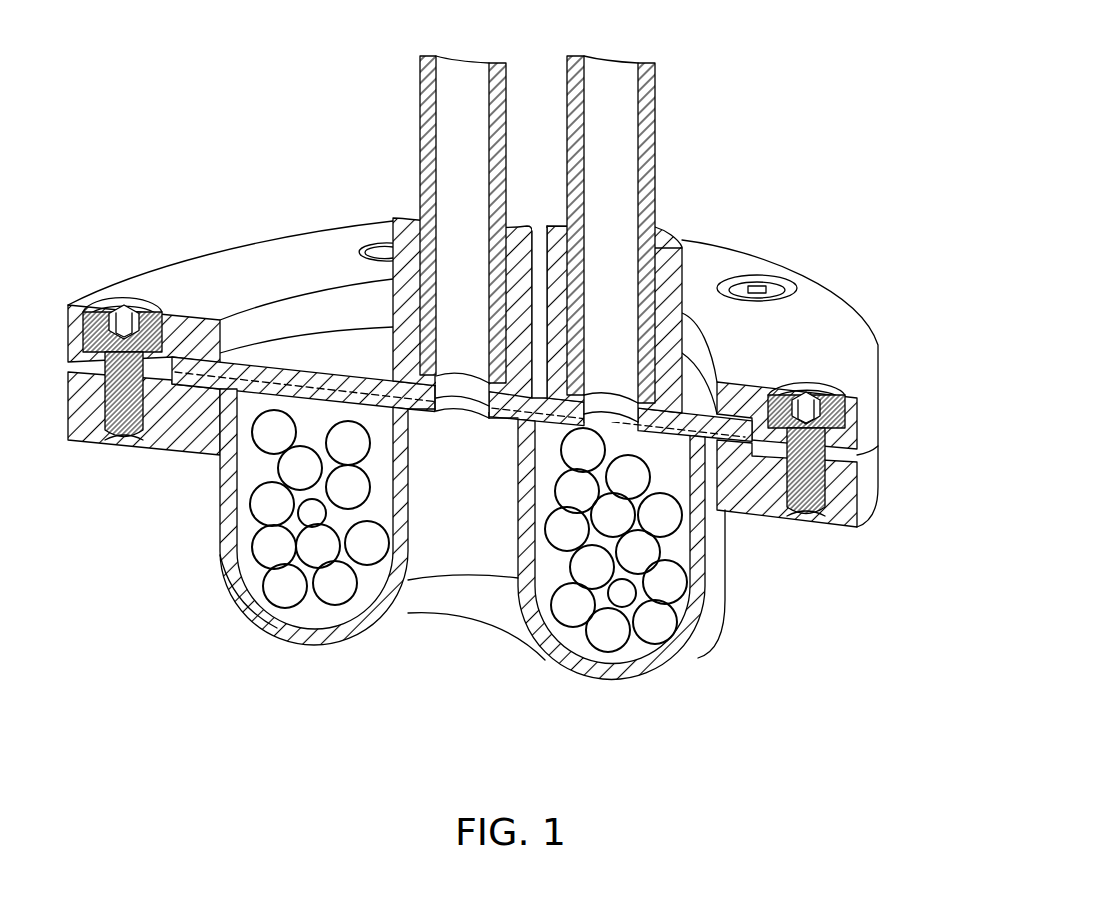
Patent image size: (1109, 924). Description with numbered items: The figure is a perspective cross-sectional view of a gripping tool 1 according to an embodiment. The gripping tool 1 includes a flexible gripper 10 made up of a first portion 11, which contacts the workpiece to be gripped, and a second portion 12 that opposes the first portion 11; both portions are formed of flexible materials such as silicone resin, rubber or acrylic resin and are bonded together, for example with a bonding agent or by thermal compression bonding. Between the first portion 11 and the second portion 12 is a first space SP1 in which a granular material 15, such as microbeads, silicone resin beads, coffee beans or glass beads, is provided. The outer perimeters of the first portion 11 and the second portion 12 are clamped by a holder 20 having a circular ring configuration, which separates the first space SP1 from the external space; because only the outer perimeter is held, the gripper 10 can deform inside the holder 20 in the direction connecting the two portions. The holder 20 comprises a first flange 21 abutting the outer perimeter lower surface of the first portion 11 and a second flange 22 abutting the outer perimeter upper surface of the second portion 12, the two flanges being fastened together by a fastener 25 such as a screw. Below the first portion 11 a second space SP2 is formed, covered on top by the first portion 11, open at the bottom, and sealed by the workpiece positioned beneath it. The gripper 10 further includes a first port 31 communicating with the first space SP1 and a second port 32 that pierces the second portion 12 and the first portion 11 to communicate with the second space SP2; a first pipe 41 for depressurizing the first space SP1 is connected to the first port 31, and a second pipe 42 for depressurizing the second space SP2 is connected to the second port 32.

The gripping tool 1 is at (805, 84).
The gripper 10 is at (462, 580).
The first portion 11 is at (347, 637).
The second portion 12 is at (409, 393).
The granular material 15 is at (263, 503).
The holder 20 is at (531, 374).
The first flange 21 is at (940, 387).
The second flange 22 is at (878, 394).
The fastener 25 is at (807, 495).
The first port 31 is at (683, 280).
The second port 32 is at (392, 268).
The first pipe 41 is at (656, 96).
The second pipe 42 is at (420, 90).
The first space SP1 is at (630, 650).
The second space SP2 is at (473, 548).